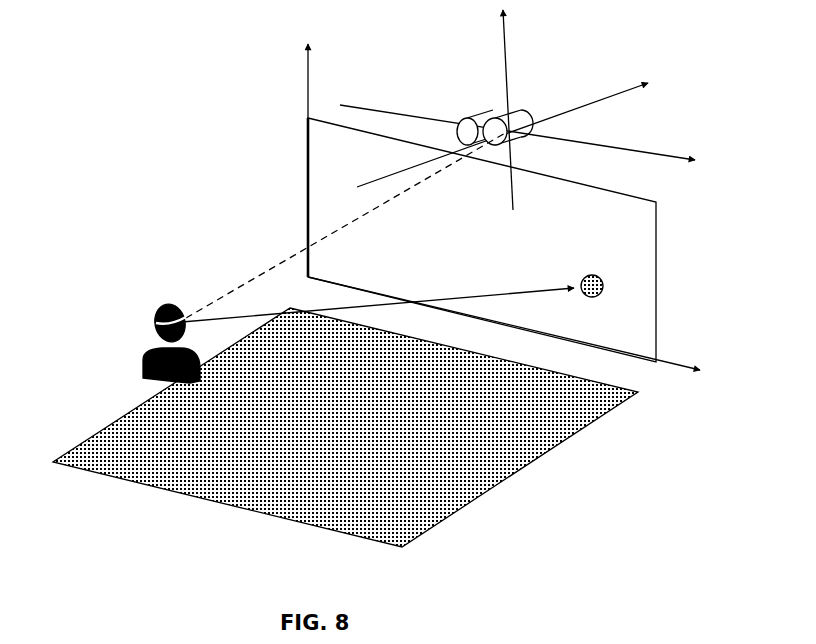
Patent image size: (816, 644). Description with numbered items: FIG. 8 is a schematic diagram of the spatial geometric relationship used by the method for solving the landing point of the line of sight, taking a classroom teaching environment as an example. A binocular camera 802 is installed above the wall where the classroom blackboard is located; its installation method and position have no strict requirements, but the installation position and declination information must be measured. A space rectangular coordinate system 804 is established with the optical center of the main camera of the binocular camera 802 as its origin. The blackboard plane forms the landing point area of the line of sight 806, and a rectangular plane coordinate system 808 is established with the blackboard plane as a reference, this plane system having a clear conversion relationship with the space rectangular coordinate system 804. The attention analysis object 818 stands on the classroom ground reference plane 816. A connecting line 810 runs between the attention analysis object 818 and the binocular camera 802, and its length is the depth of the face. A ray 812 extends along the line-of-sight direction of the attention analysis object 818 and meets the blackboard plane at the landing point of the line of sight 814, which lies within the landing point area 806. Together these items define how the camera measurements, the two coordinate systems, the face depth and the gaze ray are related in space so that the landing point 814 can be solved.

The binocular camera 802 is at (497, 118).
The space rectangular coordinate system 804 is at (598, 144).
The landing point area of the line of sight 806 is at (657, 283).
The rectangular plane coordinate system 808 is at (308, 97).
The connecting line 810 is at (272, 270).
The ray along the line-of-sight direction 812 is at (490, 295).
The landing point of the line of sight 814 is at (590, 275).
The classroom ground reference plane 816 is at (536, 470).
The attention analysis object 818 is at (172, 300).